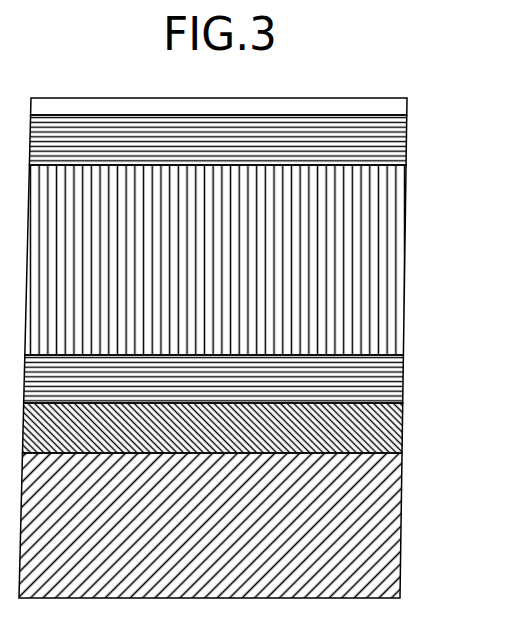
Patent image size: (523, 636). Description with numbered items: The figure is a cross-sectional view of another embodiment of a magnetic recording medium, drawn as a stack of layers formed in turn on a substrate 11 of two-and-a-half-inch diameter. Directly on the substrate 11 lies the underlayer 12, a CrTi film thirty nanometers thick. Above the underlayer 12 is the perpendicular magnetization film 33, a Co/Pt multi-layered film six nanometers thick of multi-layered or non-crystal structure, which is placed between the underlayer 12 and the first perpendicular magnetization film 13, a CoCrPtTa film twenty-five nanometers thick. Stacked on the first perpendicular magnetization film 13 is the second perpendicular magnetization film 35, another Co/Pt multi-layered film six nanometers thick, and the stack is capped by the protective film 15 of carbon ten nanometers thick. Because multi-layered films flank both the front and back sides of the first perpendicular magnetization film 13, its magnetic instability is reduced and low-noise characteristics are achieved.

The substrate 11 is at (390, 518).
The underlayer 12 is at (390, 430).
The perpendicular magnetization film 33 is at (390, 382).
The first perpendicular magnetization film 13 is at (394, 240).
The second perpendicular magnetization film 35 is at (396, 143).
The protective film 15 is at (396, 109).